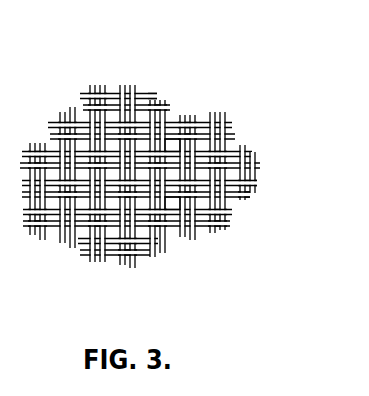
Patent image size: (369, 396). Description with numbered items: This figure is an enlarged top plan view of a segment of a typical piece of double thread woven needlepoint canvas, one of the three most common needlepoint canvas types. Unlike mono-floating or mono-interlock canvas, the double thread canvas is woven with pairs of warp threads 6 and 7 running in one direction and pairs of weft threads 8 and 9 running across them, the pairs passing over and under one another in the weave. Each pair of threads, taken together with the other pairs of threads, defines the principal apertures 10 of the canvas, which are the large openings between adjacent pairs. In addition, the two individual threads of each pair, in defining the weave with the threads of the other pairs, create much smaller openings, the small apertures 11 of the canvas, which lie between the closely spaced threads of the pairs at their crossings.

The warp thread 6 is at (92, 262).
The warp thread 7 is at (105, 262).
The weft thread 8 is at (231, 212).
The weft thread 9 is at (228, 226).
The principal aperture 10 is at (174, 205).
The small aperture 11 is at (257, 172).